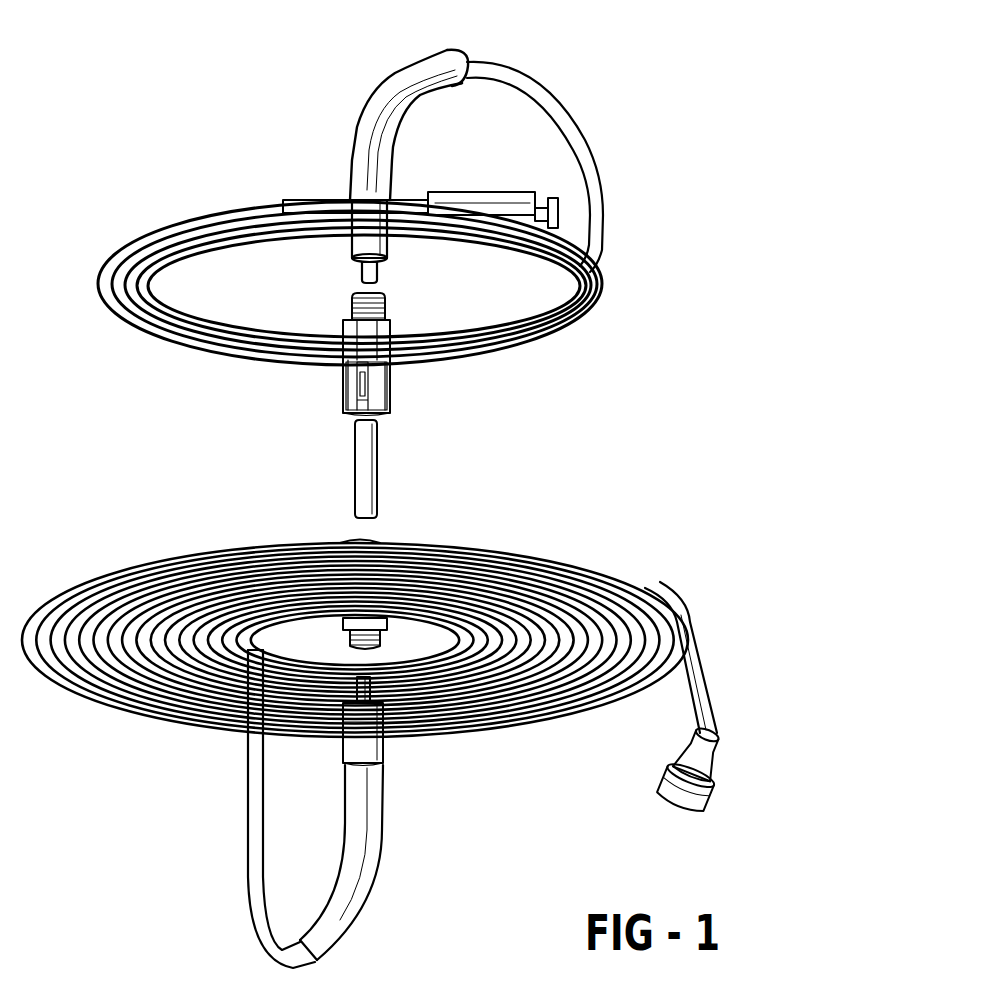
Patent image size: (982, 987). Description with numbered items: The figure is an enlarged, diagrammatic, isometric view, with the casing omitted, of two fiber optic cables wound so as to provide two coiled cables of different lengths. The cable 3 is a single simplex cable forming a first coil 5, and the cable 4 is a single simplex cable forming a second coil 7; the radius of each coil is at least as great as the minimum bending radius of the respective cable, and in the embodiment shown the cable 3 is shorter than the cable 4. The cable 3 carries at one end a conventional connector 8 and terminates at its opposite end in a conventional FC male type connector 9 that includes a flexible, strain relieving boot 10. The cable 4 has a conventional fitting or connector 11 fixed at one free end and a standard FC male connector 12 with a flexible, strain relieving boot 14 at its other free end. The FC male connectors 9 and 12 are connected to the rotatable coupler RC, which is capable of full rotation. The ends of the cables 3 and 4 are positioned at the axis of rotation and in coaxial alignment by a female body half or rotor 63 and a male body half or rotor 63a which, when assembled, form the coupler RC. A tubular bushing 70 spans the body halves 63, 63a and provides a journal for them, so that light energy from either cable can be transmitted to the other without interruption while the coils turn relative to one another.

The fiber optic cable 3 is at (590, 147).
The fiber optic cable 4 is at (677, 610).
The first coil 5 is at (603, 293).
The second coil 7 is at (113, 713).
The connector 8 is at (498, 193).
The FC male connector 9 is at (343, 240).
The strain relieving boot 10 is at (413, 75).
The fitting or connector 11 is at (702, 787).
The FC male connector 12 is at (377, 748).
The strain relieving boot 14 is at (373, 840).
The female body half or rotor 63 is at (341, 383).
The male body half or rotor 63a is at (326, 524).
The tubular bushing 70 is at (370, 492).
The 360° rotatable coupler RC is at (397, 392).